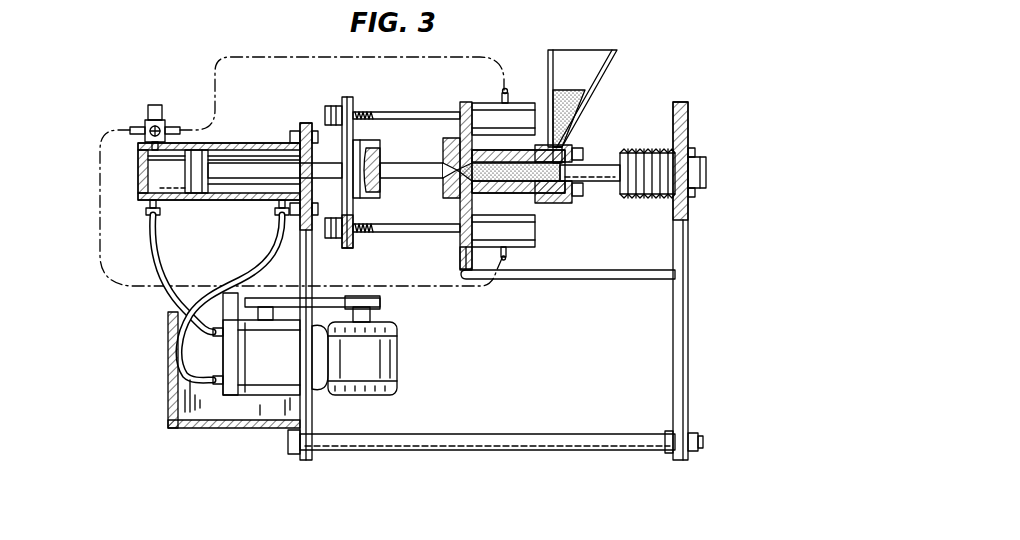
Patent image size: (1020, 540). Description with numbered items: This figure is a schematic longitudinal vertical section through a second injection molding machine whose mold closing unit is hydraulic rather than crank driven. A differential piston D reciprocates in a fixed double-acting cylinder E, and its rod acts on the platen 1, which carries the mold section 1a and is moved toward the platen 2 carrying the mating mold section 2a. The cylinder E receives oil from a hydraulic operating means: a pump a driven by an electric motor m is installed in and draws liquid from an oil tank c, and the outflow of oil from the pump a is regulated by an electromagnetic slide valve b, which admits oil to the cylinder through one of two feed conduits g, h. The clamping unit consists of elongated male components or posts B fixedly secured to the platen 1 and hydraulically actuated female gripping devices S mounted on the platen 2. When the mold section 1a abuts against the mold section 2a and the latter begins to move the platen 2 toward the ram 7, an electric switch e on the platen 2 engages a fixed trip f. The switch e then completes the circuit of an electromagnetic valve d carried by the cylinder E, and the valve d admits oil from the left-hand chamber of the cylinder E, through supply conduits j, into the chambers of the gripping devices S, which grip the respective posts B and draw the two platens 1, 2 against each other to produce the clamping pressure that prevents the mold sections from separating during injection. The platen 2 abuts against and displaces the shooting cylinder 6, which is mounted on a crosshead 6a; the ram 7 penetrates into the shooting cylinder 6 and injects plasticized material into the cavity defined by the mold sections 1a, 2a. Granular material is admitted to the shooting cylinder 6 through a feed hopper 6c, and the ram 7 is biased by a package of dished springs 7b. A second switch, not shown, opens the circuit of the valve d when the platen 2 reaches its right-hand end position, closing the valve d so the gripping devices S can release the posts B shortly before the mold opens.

The supply conduits j is at (268, 58).
The electromagnetic valve d is at (155, 108).
The differential piston D is at (199, 153).
The double-acting cylinder E is at (256, 143).
The feed conduit h is at (158, 228).
The feed conduit g is at (249, 262).
The platen 1 is at (346, 100).
The post B is at (401, 112).
The mold section 1a is at (365, 141).
The mold section 2a is at (443, 152).
The platen 2 is at (466, 103).
The gripping device S is at (516, 106).
The electric switch e is at (459, 259).
The fixed trip f is at (536, 280).
The shooting cylinder 6 is at (520, 196).
The crosshead 6a is at (560, 205).
The feed hopper 6c is at (598, 75).
The ram 7 is at (597, 165).
The package of dished springs 7b is at (651, 150).
The oil tank c is at (205, 428).
The pump a is at (262, 370).
The electromagnetic slide valve b is at (223, 350).
The electric motor m is at (398, 346).